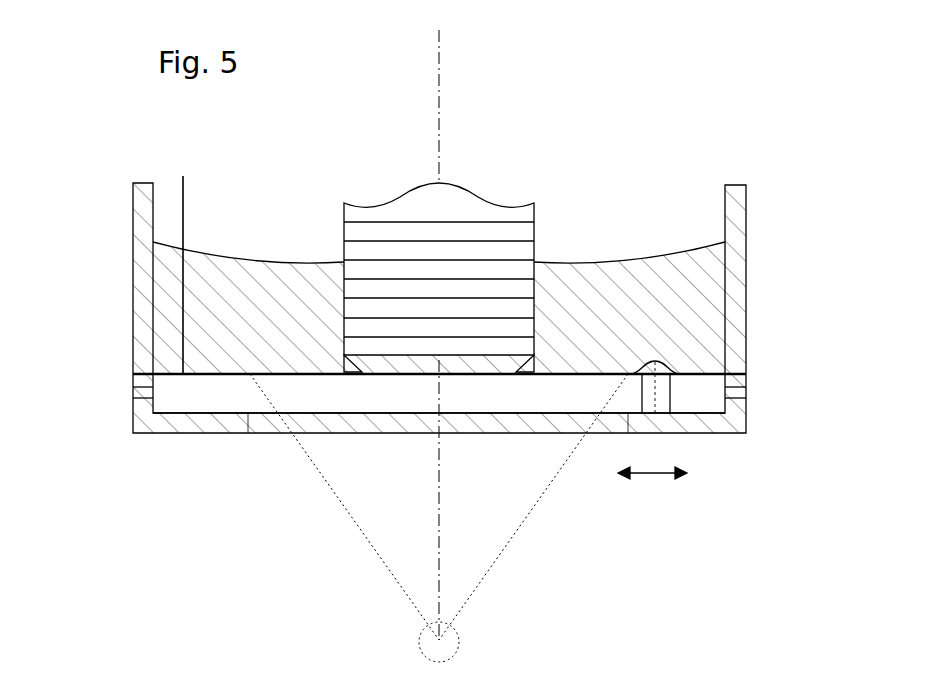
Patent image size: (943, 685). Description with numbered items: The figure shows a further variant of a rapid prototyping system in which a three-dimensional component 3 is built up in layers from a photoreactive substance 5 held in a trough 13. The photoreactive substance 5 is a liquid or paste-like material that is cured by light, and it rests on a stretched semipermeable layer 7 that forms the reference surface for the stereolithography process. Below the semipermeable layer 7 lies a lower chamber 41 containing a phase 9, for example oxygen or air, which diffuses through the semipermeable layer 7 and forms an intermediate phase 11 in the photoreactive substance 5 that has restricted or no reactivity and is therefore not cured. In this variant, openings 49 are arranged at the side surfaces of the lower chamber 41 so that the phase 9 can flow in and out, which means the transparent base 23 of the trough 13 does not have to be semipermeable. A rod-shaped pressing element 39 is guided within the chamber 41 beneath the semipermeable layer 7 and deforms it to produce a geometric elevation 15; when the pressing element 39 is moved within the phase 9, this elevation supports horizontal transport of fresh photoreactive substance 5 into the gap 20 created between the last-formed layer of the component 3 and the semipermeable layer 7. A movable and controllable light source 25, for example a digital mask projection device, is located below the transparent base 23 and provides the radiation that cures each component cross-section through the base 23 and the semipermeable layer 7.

The three-dimensional component 3 is at (552, 195).
The photoreactive substance 5 is at (276, 316).
The semipermeable layer 7 is at (707, 373).
The phase 9 is at (336, 393).
The intermediate phase 11 is at (184, 257).
The trough 13 is at (768, 184).
The geometric elevation 15 is at (657, 352).
The gap 20 is at (375, 364).
The transparent base plate 23 is at (535, 425).
The light source 25 is at (448, 640).
The pressing element 39 is at (663, 392).
The chamber 41 is at (197, 412).
The openings 49 is at (138, 392).